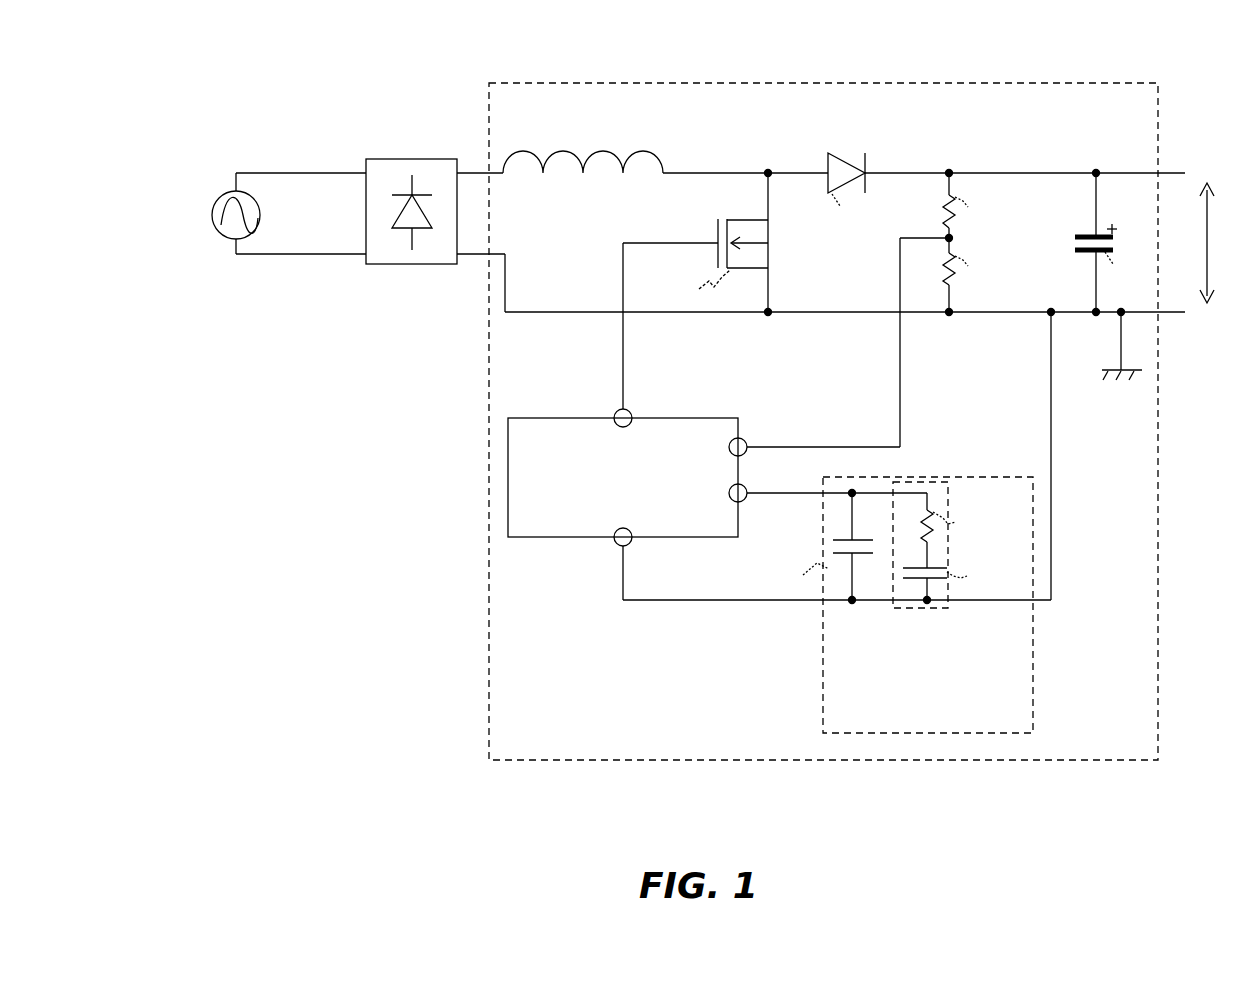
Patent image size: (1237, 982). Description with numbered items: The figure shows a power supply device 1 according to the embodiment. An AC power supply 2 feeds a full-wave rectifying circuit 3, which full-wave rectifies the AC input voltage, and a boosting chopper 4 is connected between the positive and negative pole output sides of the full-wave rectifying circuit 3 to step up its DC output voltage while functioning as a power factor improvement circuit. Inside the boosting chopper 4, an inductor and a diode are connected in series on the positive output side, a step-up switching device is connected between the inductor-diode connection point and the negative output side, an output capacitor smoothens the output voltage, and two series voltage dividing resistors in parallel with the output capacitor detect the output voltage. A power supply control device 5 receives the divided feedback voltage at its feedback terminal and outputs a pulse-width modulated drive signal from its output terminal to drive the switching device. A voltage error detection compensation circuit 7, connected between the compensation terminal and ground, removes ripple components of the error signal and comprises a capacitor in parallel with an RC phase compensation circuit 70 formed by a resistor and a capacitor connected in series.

The power supply device 1 is at (397, 49).
The AC power supply 2 is at (214, 234).
The full-wave rectifying circuit 3 is at (391, 158).
The boosting chopper 4 is at (730, 83).
The power supply control device 5 is at (541, 417).
The voltage error detection compensation circuit 7 is at (1034, 676).
The RC phase compensation circuit 70 is at (948, 608).